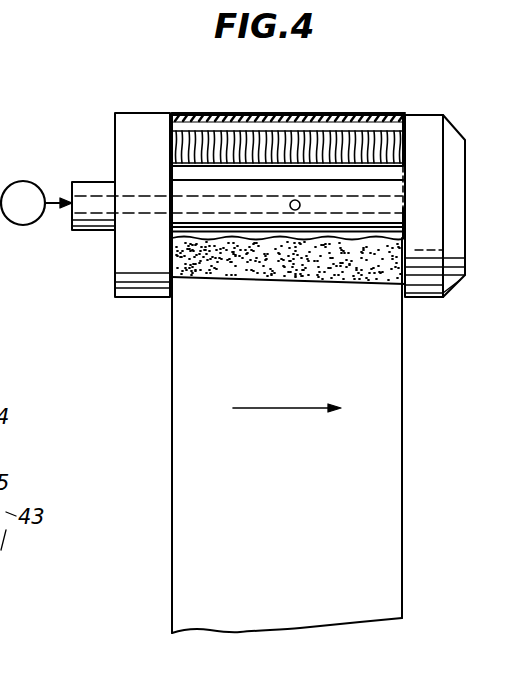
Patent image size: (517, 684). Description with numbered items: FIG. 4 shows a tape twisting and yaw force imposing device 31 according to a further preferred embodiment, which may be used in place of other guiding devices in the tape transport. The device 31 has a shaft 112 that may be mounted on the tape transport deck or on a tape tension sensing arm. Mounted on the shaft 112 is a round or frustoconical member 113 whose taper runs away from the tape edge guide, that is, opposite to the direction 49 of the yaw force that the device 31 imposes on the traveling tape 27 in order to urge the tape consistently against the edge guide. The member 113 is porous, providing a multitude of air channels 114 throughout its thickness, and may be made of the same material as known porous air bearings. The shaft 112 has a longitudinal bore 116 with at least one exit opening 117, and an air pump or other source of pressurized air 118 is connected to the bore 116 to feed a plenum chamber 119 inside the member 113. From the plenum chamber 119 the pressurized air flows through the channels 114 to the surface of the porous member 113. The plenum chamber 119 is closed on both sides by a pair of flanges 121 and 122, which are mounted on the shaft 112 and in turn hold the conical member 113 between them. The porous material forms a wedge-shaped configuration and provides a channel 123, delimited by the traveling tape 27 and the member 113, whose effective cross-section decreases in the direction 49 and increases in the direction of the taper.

The shaft 112 is at (84, 181).
The frustoconical member 113 is at (258, 277).
The air channels 114 is at (333, 140).
The longitudinal bore 116 is at (196, 216).
The exit opening 117 is at (300, 204).
The air pump 118 is at (33, 152).
The plenum chamber 119 is at (192, 176).
The flange 121 is at (129, 298).
The flange 122 is at (430, 300).
The channel 123 is at (212, 126).
The traveling tape 27 is at (345, 121).
The tape twisting and yaw force imposing device 31 is at (432, 115).
The direction of yaw force 49 is at (292, 408).